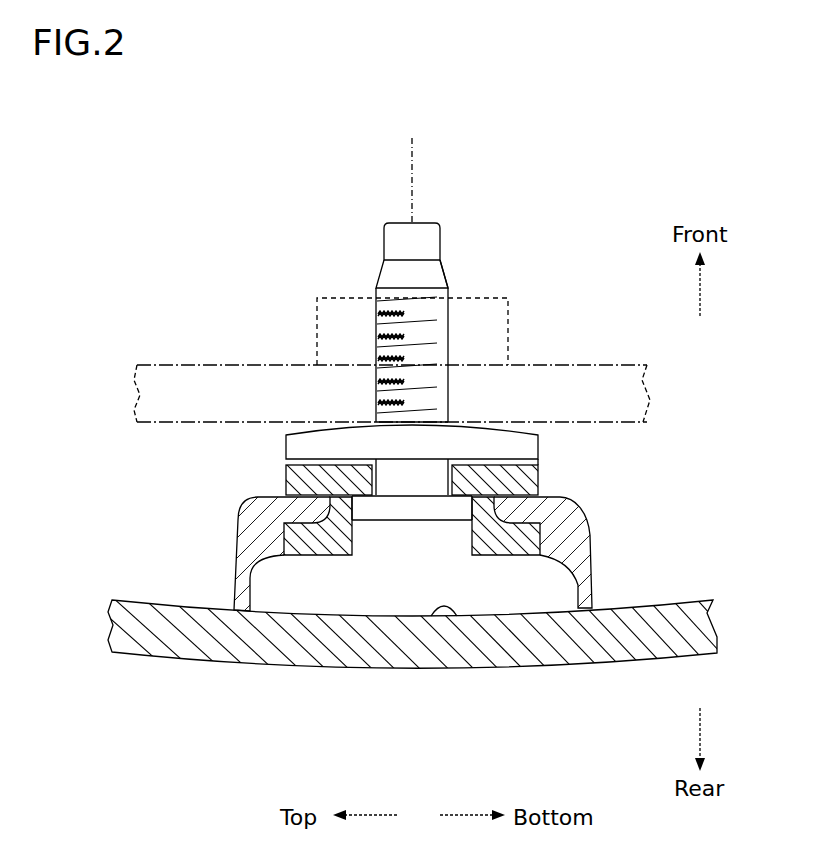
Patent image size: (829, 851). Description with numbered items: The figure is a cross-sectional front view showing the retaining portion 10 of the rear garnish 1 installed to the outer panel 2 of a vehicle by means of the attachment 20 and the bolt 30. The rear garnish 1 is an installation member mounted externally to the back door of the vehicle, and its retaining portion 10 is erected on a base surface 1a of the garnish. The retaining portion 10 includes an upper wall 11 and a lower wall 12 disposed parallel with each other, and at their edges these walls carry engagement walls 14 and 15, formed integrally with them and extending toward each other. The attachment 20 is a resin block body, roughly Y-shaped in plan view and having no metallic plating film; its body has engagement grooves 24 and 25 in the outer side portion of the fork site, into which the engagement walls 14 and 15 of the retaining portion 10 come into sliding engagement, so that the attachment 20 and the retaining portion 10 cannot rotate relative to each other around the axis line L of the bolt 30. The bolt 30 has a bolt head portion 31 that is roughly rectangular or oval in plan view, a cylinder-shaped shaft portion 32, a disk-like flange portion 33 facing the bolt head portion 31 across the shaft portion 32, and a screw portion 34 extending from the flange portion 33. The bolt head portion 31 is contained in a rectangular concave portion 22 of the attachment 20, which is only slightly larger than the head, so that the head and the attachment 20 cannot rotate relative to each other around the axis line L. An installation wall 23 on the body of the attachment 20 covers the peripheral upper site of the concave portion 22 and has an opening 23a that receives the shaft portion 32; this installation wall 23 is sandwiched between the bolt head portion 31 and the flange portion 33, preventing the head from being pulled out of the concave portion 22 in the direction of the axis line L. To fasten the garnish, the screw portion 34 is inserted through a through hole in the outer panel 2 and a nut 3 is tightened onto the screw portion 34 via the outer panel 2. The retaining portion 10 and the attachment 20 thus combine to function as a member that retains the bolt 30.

The rear garnish 1 is at (390, 690).
The base surface 1a is at (447, 622).
The outer panel 2 is at (212, 367).
The nut 3 is at (325, 318).
The retaining portion 10 is at (407, 552).
The upper wall 11 is at (238, 556).
The lower wall 12 is at (590, 565).
The engagement wall 14 is at (286, 470).
The engagement wall 15 is at (540, 487).
The attachment 20 is at (270, 464).
The concave portion 22 is at (350, 556).
The installation wall 23 is at (474, 526).
The opening 23a is at (539, 470).
The engagement groove 24 is at (276, 497).
The engagement groove 25 is at (545, 505).
The bolt 30 is at (366, 268).
The bolt head portion 31 is at (366, 512).
The shaft portion 32 is at (412, 487).
The flange portion 33 is at (438, 460).
The screw portion 34 is at (440, 308).
The axis line L is at (410, 166).